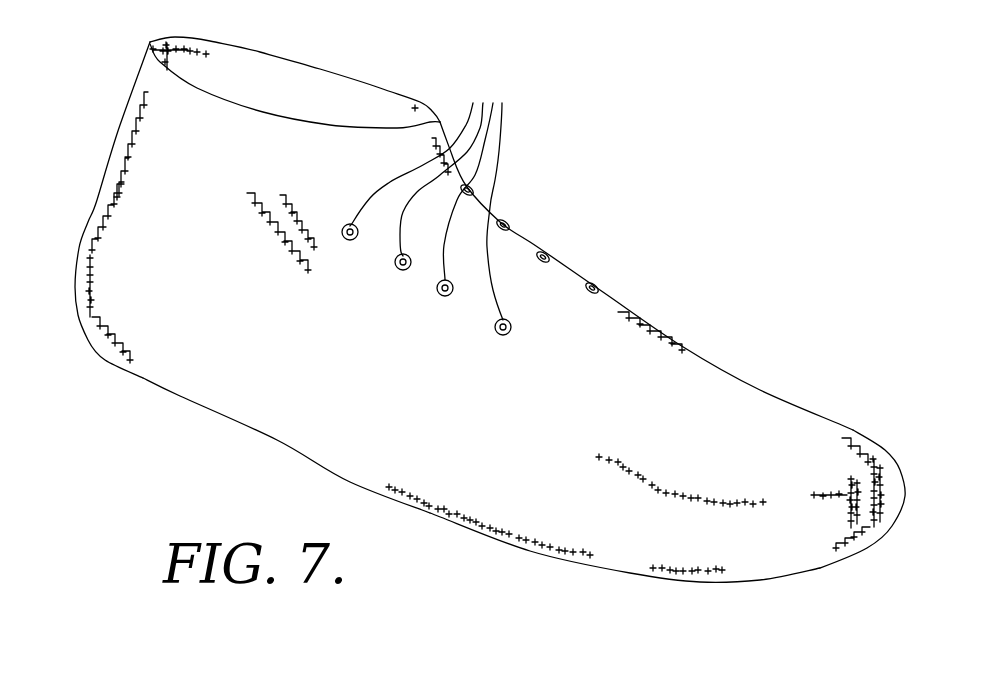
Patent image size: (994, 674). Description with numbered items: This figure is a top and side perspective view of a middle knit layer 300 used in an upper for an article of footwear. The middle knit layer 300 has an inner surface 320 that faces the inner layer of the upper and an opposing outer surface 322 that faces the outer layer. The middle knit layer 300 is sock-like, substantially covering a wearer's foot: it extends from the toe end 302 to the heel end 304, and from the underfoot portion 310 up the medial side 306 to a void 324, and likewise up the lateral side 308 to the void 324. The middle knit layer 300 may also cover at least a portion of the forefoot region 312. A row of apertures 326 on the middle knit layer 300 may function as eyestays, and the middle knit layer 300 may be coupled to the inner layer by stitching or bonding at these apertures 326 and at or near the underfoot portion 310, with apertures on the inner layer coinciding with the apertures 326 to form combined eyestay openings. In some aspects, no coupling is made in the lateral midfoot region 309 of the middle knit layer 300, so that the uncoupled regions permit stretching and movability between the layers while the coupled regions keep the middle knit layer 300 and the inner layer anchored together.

The middle knit layer 300 is at (744, 254).
The toe end 302 is at (840, 460).
The heel end 304 is at (90, 213).
The medial side 306 is at (650, 323).
The lateral side 308 is at (317, 392).
The lateral midfoot region 309 is at (382, 382).
The underfoot portion 310 is at (443, 523).
The forefoot region 312 is at (543, 307).
The inner surface 320 is at (300, 87).
The outer surface 322 is at (147, 78).
The void 324 is at (232, 76).
The apertures 326 is at (428, 200).